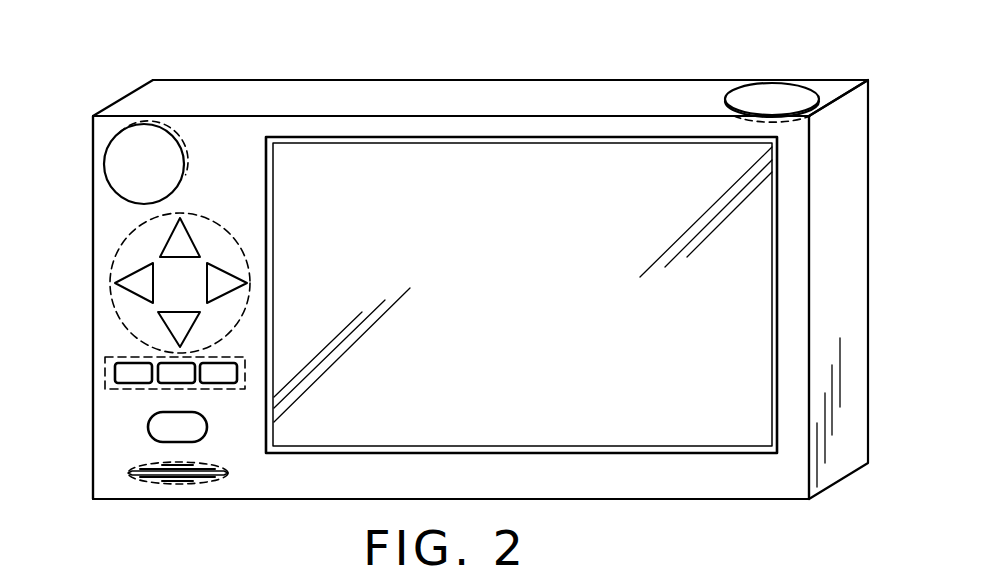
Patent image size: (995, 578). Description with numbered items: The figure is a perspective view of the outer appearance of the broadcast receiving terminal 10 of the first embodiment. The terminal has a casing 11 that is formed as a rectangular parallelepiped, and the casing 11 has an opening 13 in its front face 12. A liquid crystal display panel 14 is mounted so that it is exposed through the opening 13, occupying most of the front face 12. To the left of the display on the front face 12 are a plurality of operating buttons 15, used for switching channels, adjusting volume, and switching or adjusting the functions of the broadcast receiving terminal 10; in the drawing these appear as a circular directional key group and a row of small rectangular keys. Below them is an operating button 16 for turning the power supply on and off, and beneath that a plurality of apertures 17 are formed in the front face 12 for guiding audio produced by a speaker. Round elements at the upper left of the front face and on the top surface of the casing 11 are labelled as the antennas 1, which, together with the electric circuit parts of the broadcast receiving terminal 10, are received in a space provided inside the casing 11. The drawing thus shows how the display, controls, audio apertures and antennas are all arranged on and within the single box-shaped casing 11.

The antenna 1 is at (104, 168).
The broadcast receiving terminal 10 is at (316, 71).
The casing 11 is at (476, 86).
The front face 12 is at (100, 211).
The opening 13 is at (266, 147).
The liquid crystal display panel 14 is at (286, 182).
The operating buttons 15 is at (108, 300).
The operating button 16 is at (148, 428).
The apertures 17 is at (128, 477).